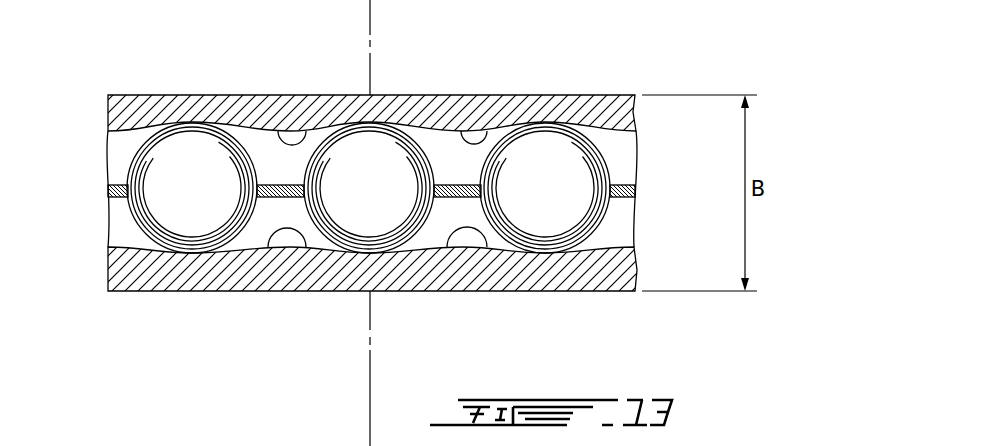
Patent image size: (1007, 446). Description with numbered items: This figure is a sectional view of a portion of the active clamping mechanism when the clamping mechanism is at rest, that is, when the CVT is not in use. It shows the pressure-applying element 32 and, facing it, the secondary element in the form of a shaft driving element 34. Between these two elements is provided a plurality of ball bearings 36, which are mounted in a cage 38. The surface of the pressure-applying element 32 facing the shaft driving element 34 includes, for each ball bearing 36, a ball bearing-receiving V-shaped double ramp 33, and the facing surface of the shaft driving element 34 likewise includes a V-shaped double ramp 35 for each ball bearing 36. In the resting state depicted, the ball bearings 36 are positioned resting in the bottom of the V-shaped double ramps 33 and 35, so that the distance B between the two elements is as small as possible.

The pressure-applying element 32 is at (132, 113).
The V-shaped double ramp 33 is at (278, 130).
The shaft driving element 34 is at (132, 268).
The V-shaped double ramp 35 is at (265, 248).
The ball bearings 36 is at (177, 195).
The cage 38 is at (106, 189).